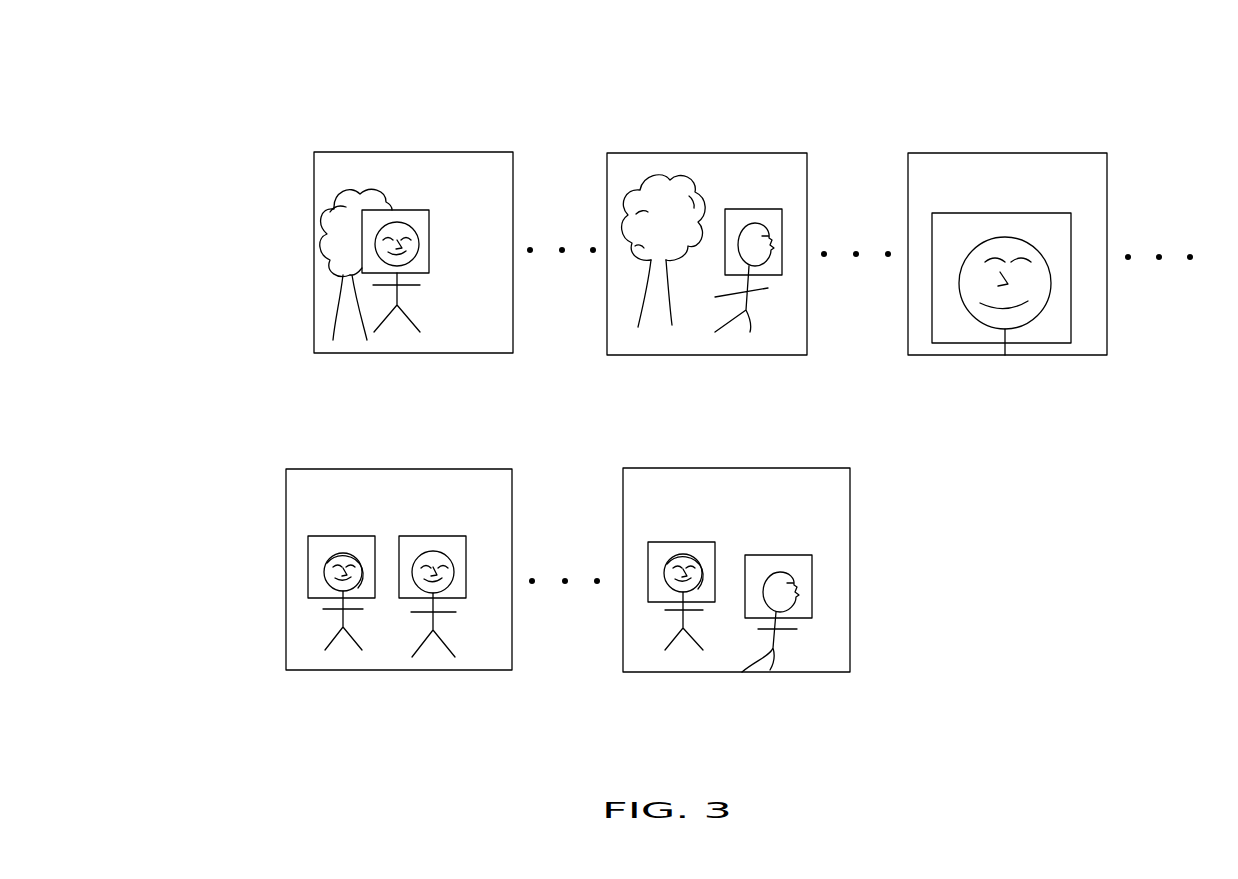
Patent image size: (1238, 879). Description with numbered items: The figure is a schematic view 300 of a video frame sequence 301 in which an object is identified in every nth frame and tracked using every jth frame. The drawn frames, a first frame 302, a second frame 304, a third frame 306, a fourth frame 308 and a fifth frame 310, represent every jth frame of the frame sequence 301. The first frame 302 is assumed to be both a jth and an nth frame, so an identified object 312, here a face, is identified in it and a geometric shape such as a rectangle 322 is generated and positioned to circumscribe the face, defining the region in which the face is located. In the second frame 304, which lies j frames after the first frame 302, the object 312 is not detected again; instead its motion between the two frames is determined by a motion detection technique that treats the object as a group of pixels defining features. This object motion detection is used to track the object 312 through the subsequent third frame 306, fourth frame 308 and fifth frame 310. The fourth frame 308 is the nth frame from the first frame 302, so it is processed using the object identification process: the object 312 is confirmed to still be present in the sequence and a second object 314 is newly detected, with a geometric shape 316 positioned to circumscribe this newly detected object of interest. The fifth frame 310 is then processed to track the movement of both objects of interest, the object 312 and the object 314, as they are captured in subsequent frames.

The schematic view 300 is at (1210, 49).
The frame sequence 301 is at (160, 186).
The first frame 302 is at (307, 163).
The second frame 304 is at (627, 148).
The third frame 306 is at (985, 148).
The fourth frame 308 is at (283, 500).
The fifth frame 310 is at (852, 480).
The identified object 312 is at (417, 213).
The newly detected object 314 is at (325, 576).
The geometric shape 316 is at (352, 537).
The rectangle 322 is at (335, 238).